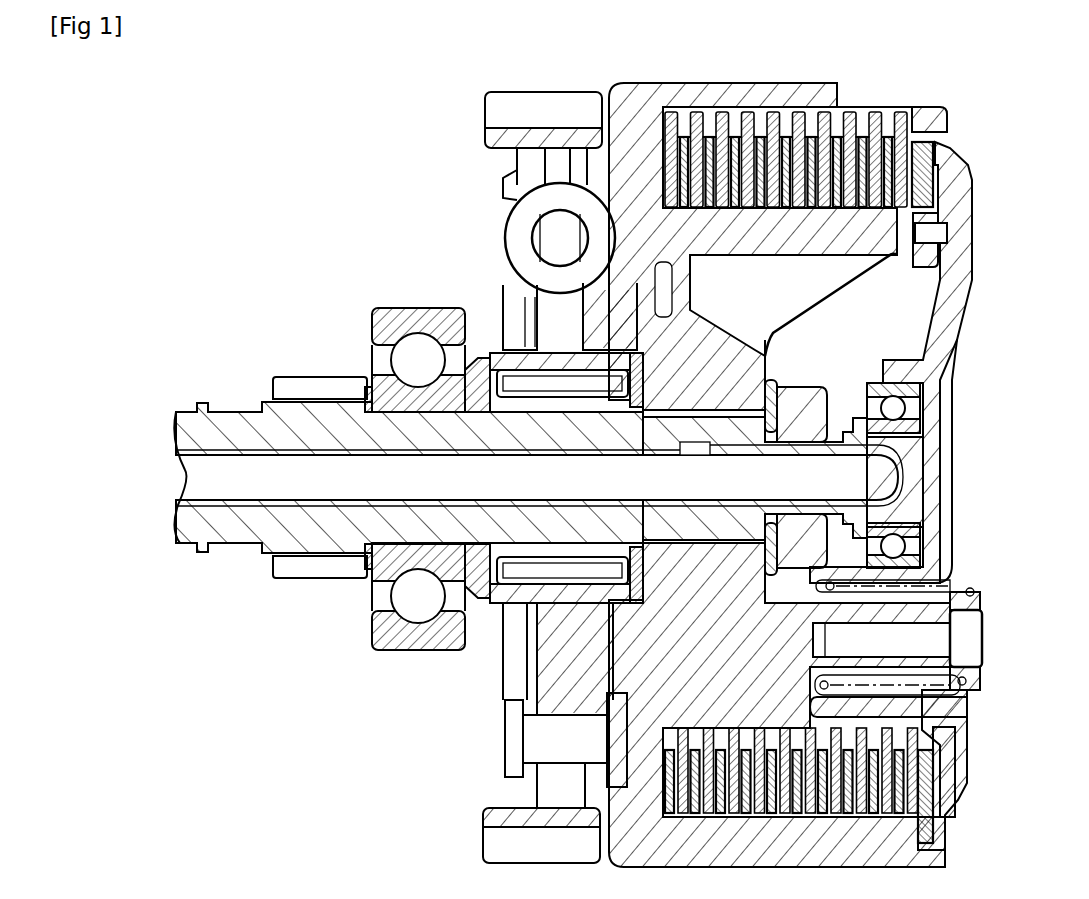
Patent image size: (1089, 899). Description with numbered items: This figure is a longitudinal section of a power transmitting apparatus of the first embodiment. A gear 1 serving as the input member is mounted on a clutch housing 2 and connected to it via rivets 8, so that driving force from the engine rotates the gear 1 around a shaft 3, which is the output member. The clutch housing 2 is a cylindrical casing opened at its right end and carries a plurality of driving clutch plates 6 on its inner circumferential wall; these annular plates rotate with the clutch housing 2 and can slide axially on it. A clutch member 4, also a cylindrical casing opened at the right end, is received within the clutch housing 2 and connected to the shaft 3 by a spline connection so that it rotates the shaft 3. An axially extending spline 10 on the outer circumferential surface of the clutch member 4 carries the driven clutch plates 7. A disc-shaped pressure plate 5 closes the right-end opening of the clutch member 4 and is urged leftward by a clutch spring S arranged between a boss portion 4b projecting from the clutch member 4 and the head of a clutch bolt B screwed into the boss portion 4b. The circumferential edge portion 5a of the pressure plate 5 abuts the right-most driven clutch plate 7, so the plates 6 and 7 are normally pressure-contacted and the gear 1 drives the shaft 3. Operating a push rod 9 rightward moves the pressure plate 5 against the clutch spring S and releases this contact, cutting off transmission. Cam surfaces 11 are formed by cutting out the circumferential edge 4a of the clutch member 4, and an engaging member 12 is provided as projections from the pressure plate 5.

The gear 1 is at (485, 108).
The clutch housing 2 is at (712, 86).
The shaft 3 is at (233, 422).
The clutch member 4 is at (770, 352).
The circumferential edge 4a is at (937, 727).
The boss portion 4b is at (967, 703).
The pressure plate 5 is at (968, 323).
The circumferential edge portion 5a is at (942, 163).
The driving clutch plates 6 is at (900, 112).
The driven clutch plates 7 is at (862, 815).
The rivets 8 is at (505, 738).
The push rod 9 is at (250, 488).
The spline 10 is at (927, 740).
The cam surfaces 11 is at (907, 270).
The engaging member 12 is at (927, 295).
The clutch spring S is at (962, 580).
The clutch bolt B is at (982, 633).